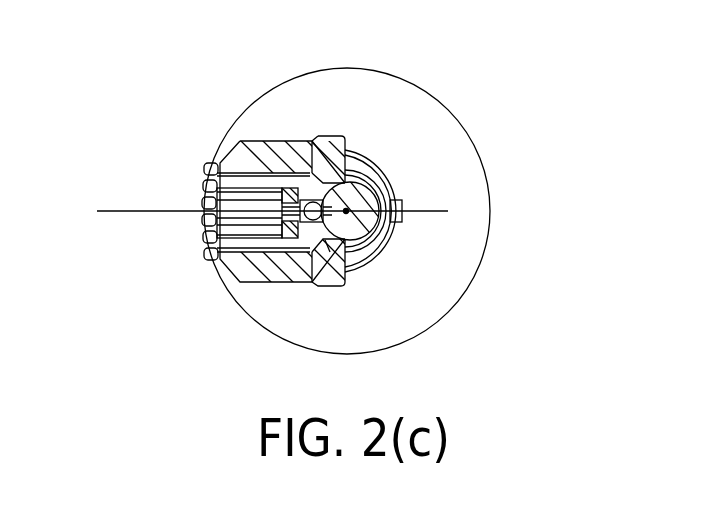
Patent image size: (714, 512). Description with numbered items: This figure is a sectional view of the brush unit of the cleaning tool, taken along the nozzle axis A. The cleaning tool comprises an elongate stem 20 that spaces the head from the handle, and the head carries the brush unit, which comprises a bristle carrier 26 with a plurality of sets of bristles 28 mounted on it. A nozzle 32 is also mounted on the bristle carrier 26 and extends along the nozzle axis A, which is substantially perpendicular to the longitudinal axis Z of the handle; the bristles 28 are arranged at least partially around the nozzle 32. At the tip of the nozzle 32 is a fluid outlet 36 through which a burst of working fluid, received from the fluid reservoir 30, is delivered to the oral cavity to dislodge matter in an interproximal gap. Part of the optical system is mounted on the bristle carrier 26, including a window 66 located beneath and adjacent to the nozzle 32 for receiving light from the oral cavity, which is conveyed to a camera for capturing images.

The stem 20 is at (378, 185).
The bristle carrier 26 is at (337, 263).
The bristles 28 is at (255, 143).
The fluid reservoir 30 is at (465, 257).
The nozzle 32 is at (325, 240).
The fluid outlet 36 is at (297, 214).
The window 66 is at (303, 165).